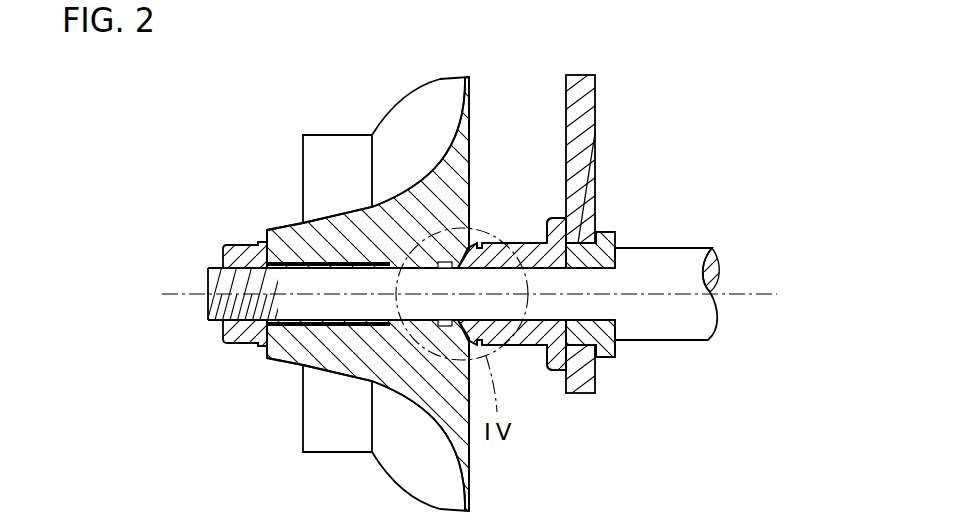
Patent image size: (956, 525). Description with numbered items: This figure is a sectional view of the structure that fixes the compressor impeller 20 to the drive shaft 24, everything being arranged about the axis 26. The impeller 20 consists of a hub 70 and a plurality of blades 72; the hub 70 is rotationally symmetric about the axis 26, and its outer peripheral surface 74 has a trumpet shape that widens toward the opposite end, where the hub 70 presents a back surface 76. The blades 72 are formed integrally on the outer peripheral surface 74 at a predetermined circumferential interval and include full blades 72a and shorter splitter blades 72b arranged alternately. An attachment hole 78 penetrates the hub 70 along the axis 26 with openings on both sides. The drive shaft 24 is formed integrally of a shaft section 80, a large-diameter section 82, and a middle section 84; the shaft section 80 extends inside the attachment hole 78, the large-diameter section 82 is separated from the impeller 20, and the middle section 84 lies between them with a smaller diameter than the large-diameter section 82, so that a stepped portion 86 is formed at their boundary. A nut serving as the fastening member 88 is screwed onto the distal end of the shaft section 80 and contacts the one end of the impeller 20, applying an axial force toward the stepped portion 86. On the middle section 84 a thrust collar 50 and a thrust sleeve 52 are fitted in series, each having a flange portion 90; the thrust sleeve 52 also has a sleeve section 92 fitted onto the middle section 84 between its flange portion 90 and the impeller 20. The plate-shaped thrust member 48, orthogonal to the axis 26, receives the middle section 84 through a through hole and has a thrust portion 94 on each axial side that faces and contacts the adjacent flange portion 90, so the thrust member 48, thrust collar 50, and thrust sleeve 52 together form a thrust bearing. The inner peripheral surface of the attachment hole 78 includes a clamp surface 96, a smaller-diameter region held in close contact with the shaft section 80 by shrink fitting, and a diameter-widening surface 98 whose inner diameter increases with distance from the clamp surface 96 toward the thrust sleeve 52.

The impeller 20 is at (300, 132).
The drive shaft 24 is at (693, 246).
The axis 26 is at (730, 293).
The thrust member 48 is at (597, 108).
The thrust collar 50 is at (616, 240).
The thrust sleeve 52 is at (527, 243).
The hub 70 is at (296, 222).
The blades 72 is at (380, 280).
The full blades 72a is at (345, 143).
The splitter blades 72b is at (413, 110).
The outer peripheral surface 74 is at (352, 213).
The back surface 76 is at (470, 147).
The attachment hole 78 is at (345, 327).
The shaft section 80 is at (303, 268).
The large-diameter section 82 is at (658, 247).
The middle section 84 is at (514, 322).
The stepped portion 86 is at (614, 355).
The fastening member 88 is at (223, 244).
The flange portion 90 is at (553, 218).
The sleeve section 92 is at (482, 243).
The thrust portion 94 is at (563, 353).
The clamp surface 96 is at (414, 320).
The diameter-widening surface 98 is at (470, 250).